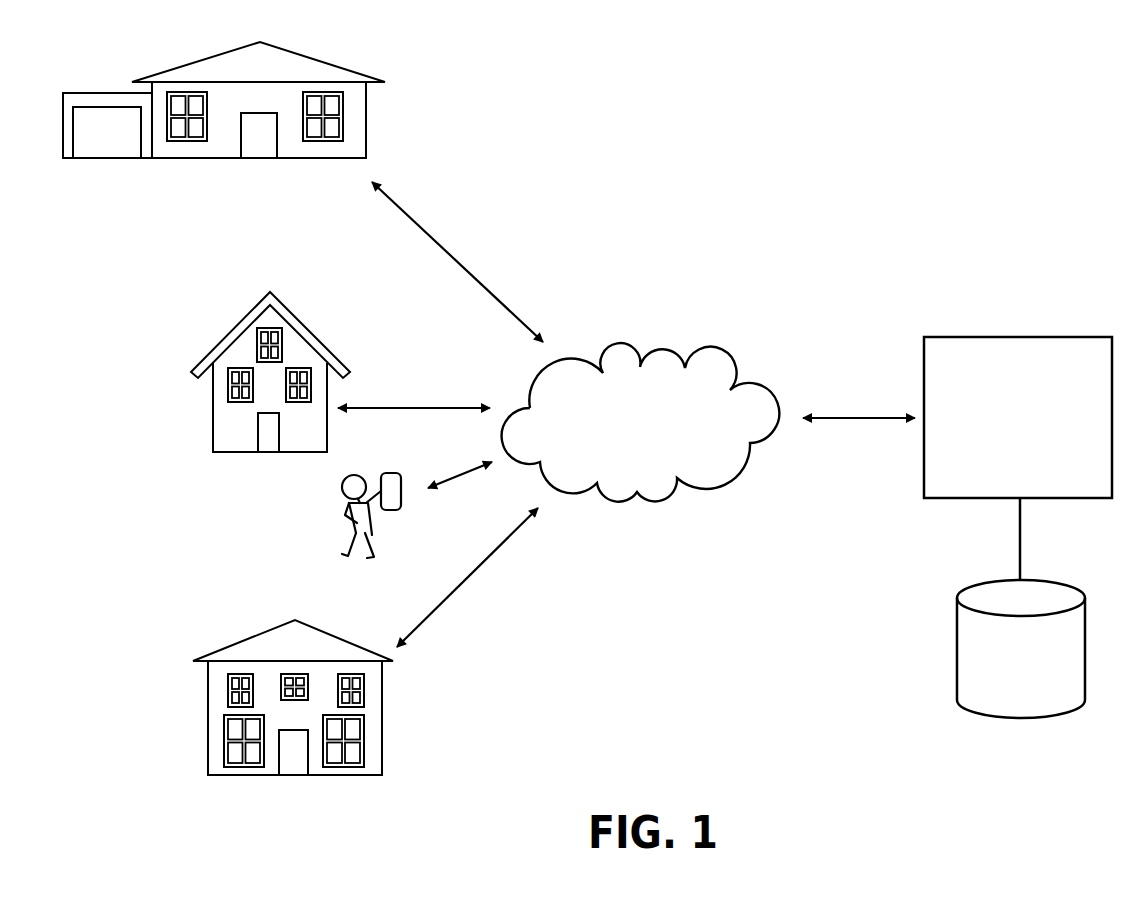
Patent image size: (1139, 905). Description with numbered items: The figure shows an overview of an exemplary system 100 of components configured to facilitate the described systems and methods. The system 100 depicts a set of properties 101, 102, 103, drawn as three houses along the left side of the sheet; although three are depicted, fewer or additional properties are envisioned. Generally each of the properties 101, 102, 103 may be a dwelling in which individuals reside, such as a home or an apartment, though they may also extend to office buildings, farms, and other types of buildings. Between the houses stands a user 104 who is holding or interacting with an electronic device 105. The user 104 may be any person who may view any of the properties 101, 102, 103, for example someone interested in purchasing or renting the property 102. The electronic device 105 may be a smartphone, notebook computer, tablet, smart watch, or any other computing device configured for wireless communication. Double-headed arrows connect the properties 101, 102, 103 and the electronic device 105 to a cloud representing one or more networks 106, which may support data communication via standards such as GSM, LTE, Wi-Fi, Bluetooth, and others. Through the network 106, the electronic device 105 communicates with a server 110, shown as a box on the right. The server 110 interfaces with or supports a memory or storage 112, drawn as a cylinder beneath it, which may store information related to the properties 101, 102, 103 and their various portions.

The system 100 is at (583, 122).
The property 101 is at (182, 68).
The property 102 is at (230, 328).
The property 103 is at (250, 640).
The user 104 is at (342, 512).
The electronic device 105 is at (393, 472).
The network 106 is at (718, 352).
The server 110 is at (1053, 335).
The storage 112 is at (982, 588).